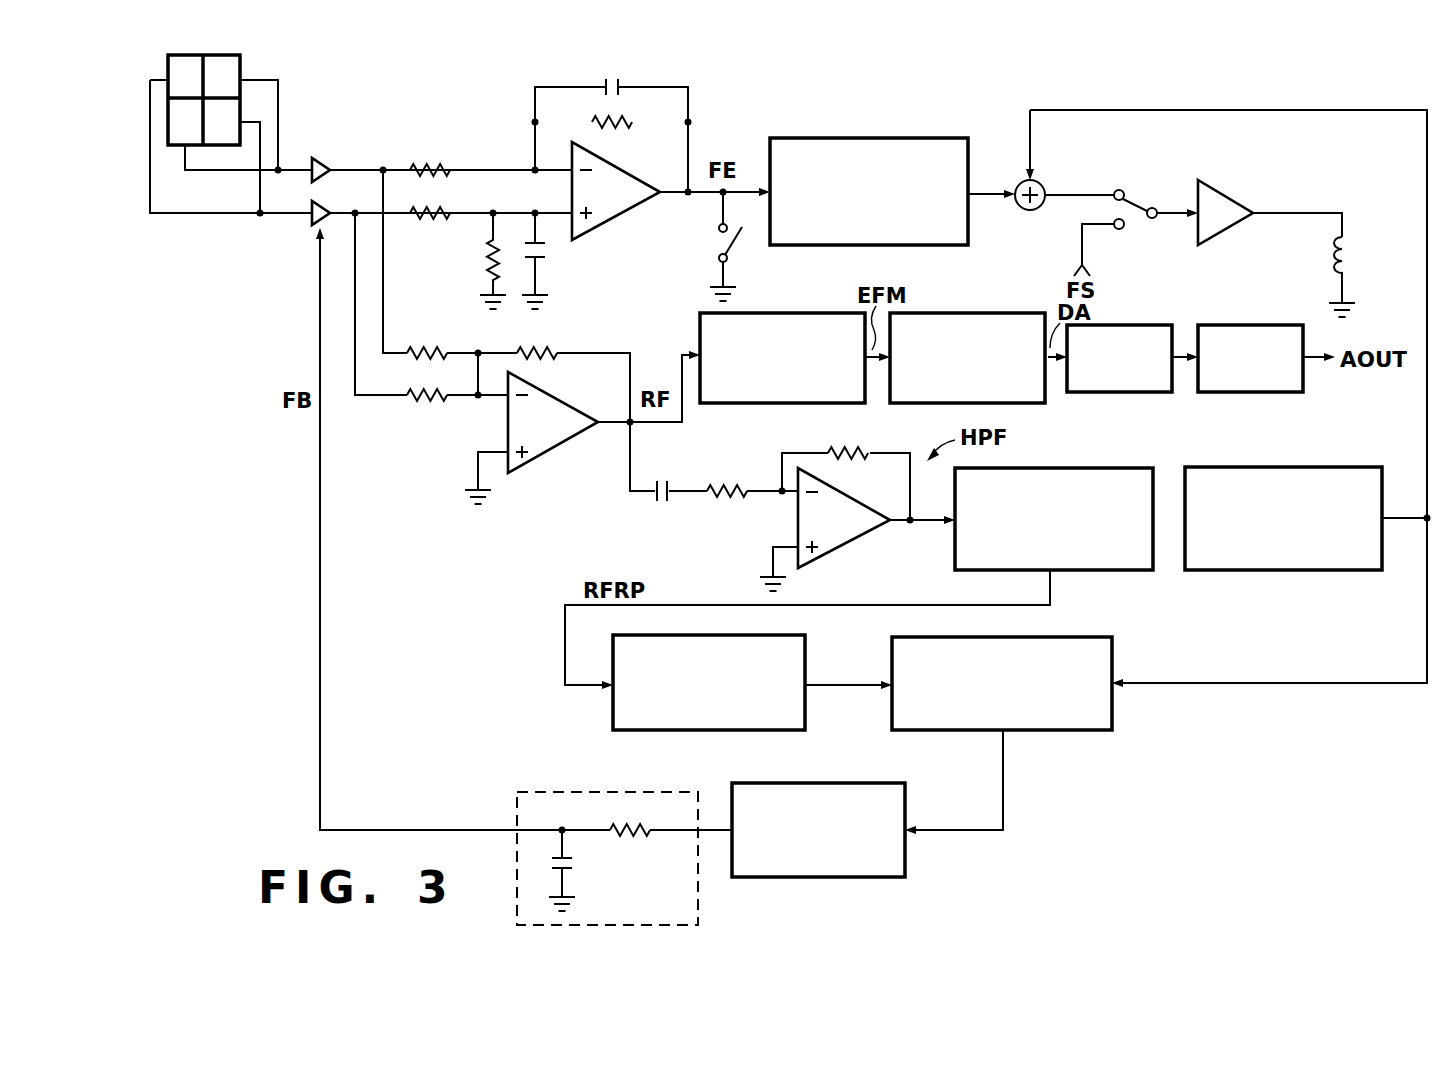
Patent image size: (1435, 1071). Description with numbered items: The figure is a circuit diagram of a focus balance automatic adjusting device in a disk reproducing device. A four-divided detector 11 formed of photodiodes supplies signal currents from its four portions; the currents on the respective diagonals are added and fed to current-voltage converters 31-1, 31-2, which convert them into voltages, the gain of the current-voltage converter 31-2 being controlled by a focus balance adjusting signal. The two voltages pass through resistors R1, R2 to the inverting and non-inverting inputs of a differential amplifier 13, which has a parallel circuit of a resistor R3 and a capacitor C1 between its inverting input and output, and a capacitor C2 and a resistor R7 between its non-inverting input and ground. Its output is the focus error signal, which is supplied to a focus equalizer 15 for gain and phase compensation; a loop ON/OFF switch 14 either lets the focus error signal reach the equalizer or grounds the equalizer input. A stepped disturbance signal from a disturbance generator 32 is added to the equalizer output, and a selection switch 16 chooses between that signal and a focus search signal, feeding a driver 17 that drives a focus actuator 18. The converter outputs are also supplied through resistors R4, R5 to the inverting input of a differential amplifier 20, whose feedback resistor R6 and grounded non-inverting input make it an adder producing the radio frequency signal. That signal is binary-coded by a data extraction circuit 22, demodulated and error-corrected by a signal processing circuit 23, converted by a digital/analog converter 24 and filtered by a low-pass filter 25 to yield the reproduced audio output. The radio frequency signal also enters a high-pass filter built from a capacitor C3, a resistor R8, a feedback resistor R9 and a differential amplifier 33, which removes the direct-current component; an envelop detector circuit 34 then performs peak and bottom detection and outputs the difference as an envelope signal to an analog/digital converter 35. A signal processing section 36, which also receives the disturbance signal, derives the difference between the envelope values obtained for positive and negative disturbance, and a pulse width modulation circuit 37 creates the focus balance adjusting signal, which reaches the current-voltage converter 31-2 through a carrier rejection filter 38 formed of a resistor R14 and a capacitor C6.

The four-divided detector 11 is at (242, 67).
The current-voltage converter 31-1 is at (325, 157).
The current-voltage converter 31-2 is at (311, 221).
The resistor R1 is at (423, 161).
The resistor R2 is at (443, 208).
The resistor R3 is at (617, 135).
The resistor R7 is at (482, 262).
The capacitor C1 is at (613, 84).
The capacitor C2 is at (548, 252).
The differential amplifier 13 is at (634, 208).
The loop ON/OFF switch 14 is at (715, 239).
The focus equalizer 15 is at (848, 138).
The selection switch 16 is at (1138, 205).
The driver 17 is at (1233, 200).
The focus actuator 18 is at (1352, 262).
The resistor R4 is at (428, 346).
The resistor R5 is at (428, 403).
The resistor R6 is at (543, 352).
The differential amplifier 20 is at (568, 444).
The data extraction circuit 22 is at (800, 313).
The signal processing circuit 23 is at (972, 313).
The digital/analog converter 24 is at (1134, 325).
The low-pass filter 25 is at (1234, 325).
The capacitor C3 is at (663, 503).
The resistor R8 is at (734, 487).
The resistor R9 is at (865, 452).
The differential amplifier 33 is at (849, 545).
The envelop detector circuit 34 is at (1068, 468).
The disturbance generator 32 is at (1300, 467).
The analog/digital converter 35 is at (806, 665).
The signal processing section 36 is at (1114, 660).
The pulse width modulation circuit 37 is at (828, 783).
The carrier rejection filter 38 is at (603, 792).
The resistor R14 is at (628, 838).
The capacitor C6 is at (581, 862).